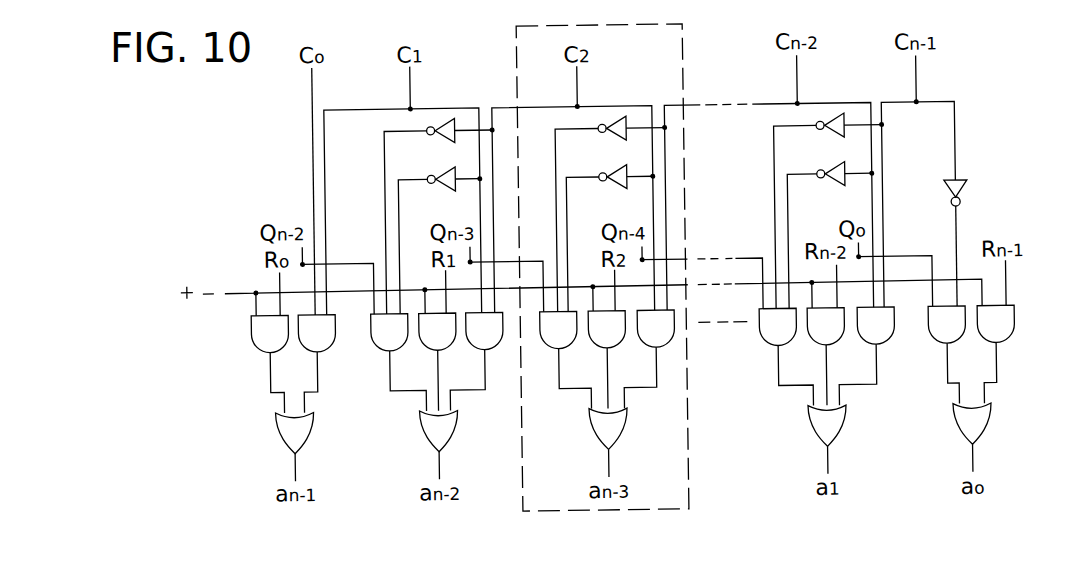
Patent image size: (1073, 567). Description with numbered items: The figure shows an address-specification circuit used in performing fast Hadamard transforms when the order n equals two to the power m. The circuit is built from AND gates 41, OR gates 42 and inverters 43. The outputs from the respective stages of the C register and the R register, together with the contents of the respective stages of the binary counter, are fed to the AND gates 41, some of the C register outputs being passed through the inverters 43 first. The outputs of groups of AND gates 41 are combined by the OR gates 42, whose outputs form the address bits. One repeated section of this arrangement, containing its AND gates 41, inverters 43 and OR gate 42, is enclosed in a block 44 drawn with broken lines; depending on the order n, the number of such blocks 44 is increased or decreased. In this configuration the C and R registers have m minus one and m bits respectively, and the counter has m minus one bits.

The AND gate 41 is at (264, 338).
The OR gate 42 is at (286, 434).
The inverter 43 is at (440, 138).
The block 44 is at (683, 469).